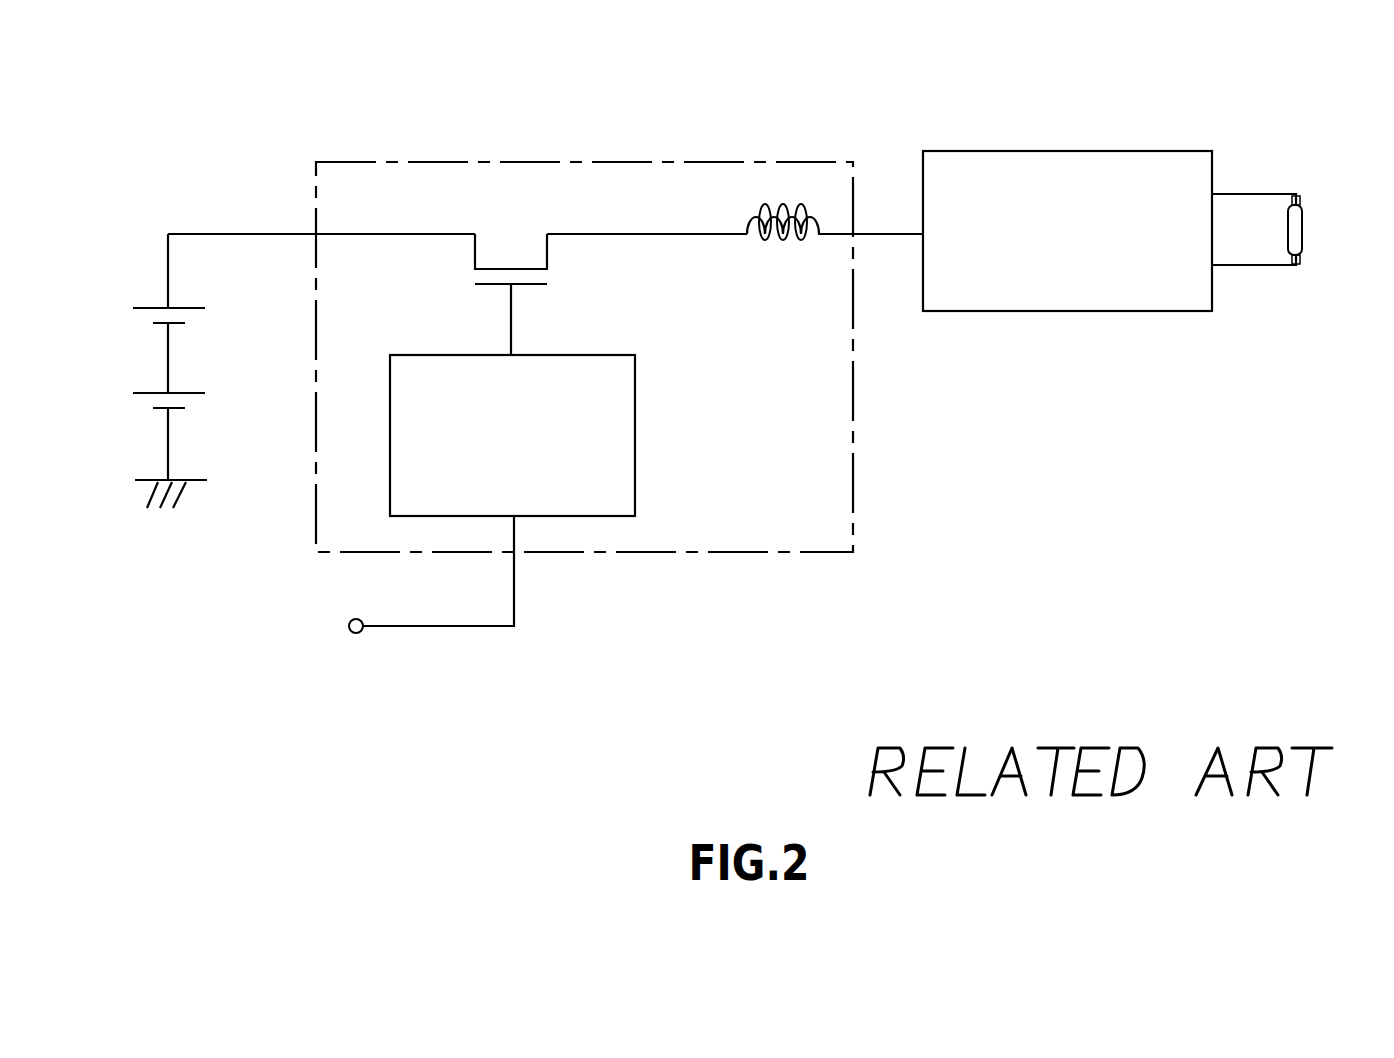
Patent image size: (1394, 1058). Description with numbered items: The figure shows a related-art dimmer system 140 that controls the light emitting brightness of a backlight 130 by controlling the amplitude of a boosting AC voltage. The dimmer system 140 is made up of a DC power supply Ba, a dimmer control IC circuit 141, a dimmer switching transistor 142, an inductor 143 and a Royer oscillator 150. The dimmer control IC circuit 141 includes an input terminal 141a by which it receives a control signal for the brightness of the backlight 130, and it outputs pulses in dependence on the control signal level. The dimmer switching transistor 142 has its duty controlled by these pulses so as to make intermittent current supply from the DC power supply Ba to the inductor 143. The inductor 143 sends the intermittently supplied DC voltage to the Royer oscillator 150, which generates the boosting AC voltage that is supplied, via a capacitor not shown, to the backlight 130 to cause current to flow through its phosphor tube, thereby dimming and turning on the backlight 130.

The DC power supply Ba is at (126, 293).
The dimmer system 140 is at (1355, 710).
The dimmer control IC circuit 141 is at (635, 435).
The input terminal 141a is at (356, 634).
The dimmer switching transistor 142 is at (511, 269).
The inductor 143 is at (782, 243).
The Royer oscillator 150 is at (1043, 150).
The backlight 130 is at (1303, 228).